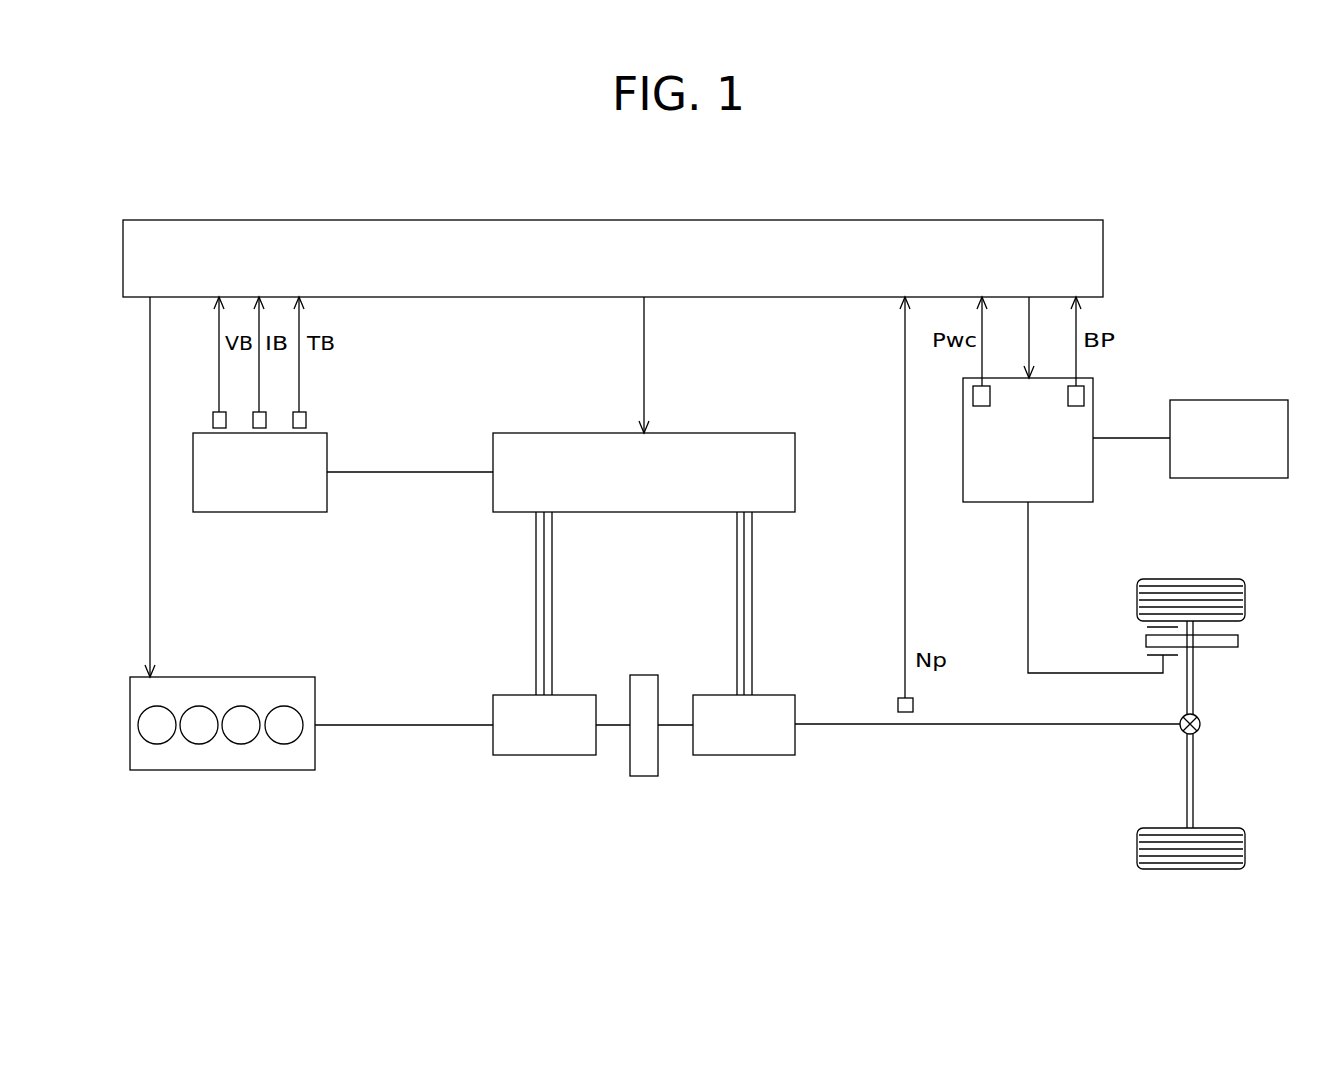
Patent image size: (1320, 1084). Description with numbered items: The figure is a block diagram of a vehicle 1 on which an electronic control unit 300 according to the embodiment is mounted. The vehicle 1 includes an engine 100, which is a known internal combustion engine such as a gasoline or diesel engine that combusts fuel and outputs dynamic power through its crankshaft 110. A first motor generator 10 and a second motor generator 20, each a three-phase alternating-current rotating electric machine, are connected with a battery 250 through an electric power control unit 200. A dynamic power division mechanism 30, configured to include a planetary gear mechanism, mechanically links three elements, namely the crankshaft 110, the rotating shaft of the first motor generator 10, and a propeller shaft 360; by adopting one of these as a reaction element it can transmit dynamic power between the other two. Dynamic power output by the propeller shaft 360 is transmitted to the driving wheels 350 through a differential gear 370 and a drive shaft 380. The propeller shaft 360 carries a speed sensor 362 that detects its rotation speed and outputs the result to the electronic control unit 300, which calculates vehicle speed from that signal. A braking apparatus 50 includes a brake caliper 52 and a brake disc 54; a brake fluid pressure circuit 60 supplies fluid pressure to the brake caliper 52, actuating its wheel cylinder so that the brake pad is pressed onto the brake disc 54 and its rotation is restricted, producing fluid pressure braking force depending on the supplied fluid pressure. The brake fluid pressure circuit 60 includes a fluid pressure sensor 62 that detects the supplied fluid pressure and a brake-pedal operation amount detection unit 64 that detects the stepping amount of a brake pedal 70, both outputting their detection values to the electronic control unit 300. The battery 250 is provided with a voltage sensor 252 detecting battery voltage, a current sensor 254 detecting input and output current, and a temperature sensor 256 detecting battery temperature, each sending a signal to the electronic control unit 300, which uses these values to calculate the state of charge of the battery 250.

The vehicle 1 is at (1209, 148).
The first motor generator 10 is at (578, 694).
The second motor generator 20 is at (775, 694).
The dynamic power division mechanism 30 is at (645, 674).
The braking apparatus 50 is at (1133, 612).
The brake caliper 52 is at (1177, 658).
The brake disc 54 is at (1146, 641).
The brake fluid pressure circuit 60 is at (1060, 503).
The fluid pressure sensor 62 is at (973, 385).
The brake-pedal operation amount detection unit 64 is at (1085, 385).
The brake pedal 70 is at (1255, 400).
The engine 100 is at (280, 676).
The crankshaft 110 is at (345, 726).
The electric power control unit 200 is at (736, 431).
The battery 250 is at (292, 512).
The voltage sensor 252 is at (215, 411).
The current sensor 254 is at (302, 411).
The temperature sensor 256 is at (262, 411).
The electronic control unit 300 is at (1013, 217).
The driving wheels 350 is at (1213, 578).
The propeller shaft 360 is at (955, 728).
The speed sensor 362 is at (914, 705).
The differential gear 370 is at (1202, 724).
The drive shaft 380 is at (1195, 676).